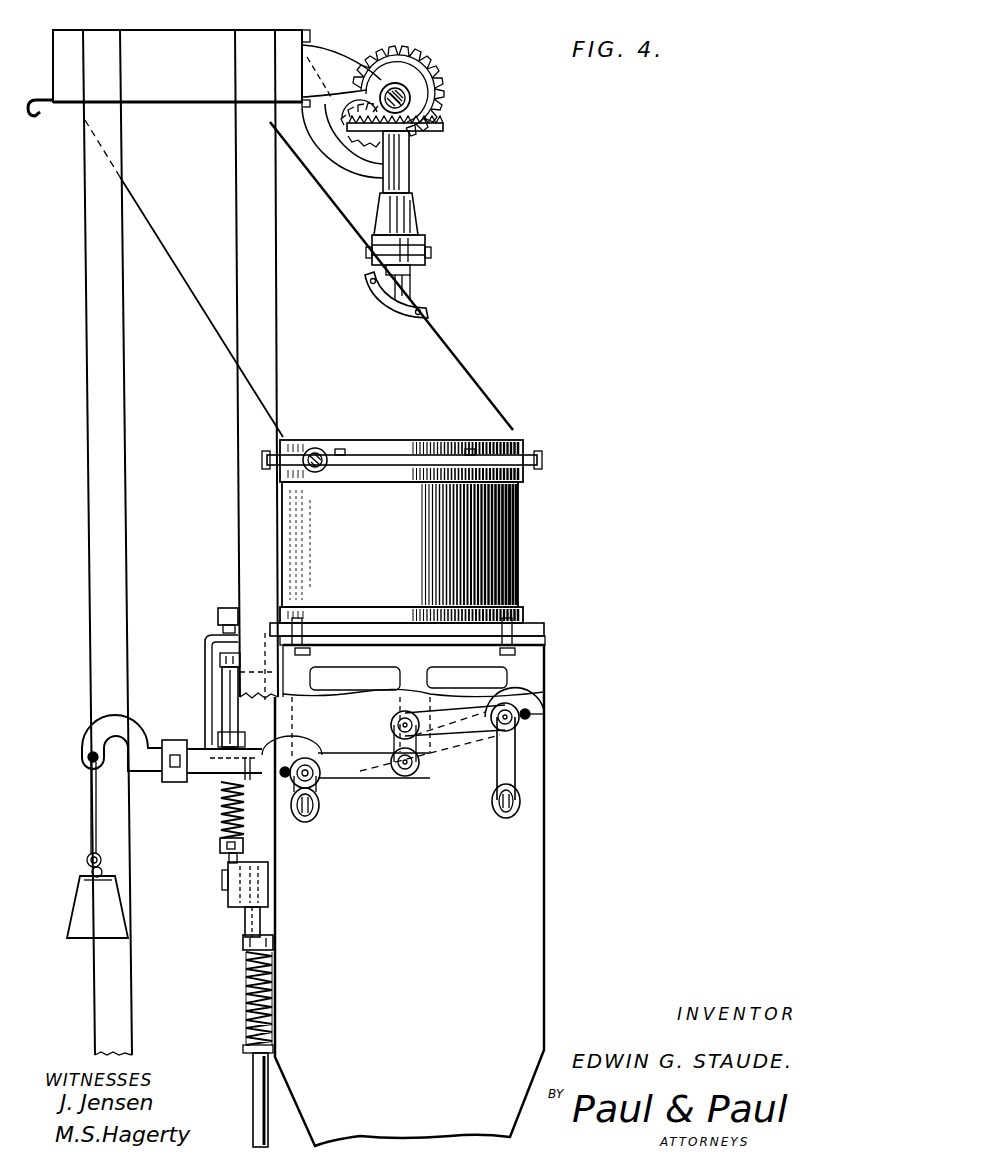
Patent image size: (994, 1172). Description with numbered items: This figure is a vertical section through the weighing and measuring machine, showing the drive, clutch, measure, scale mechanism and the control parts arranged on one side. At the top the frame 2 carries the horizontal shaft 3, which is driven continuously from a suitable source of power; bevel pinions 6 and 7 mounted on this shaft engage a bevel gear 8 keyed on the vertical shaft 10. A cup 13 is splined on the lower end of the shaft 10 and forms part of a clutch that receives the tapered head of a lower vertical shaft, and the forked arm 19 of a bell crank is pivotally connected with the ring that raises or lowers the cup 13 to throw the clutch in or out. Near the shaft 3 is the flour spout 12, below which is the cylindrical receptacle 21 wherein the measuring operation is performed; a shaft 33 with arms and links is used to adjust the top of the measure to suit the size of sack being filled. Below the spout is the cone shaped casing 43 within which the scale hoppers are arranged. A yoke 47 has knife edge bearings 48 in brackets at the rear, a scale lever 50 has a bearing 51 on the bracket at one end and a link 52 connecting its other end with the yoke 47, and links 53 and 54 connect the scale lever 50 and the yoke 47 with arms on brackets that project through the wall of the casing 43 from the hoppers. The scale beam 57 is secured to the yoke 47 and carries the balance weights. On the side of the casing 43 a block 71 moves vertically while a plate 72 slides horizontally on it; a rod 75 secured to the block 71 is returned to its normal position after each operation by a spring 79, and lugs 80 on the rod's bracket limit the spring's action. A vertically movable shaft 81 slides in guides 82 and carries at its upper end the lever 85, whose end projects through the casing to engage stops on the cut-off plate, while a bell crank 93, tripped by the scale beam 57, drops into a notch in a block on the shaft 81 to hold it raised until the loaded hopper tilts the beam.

The frame 2 is at (124, 373).
The horizontal shaft 3 is at (412, 98).
The bevel pinion 6 is at (412, 62).
The bevel pinion 7 is at (440, 76).
The bevel gear 8 is at (440, 129).
The shaft 10 is at (404, 195).
The flour spout 12 is at (452, 374).
The cup 13 is at (416, 217).
The forked arm 19 is at (428, 251).
The cylindrical receptacle 21 is at (520, 520).
The shaft 33 is at (324, 451).
The cone shaped casing 43 is at (530, 963).
The yoke 47 is at (360, 770).
The knife edge bearings 48 is at (291, 764).
The scale lever 50 is at (465, 727).
The bearing 51 is at (534, 719).
The link 52 is at (392, 740).
The link 53 is at (503, 768).
The link 54 is at (314, 789).
The scale beam 57 is at (206, 770).
The block 71 is at (250, 892).
The plate 72 is at (228, 873).
The rod 75 is at (252, 1070).
The spring 79 is at (246, 998).
The lugs 80 is at (244, 946).
The vertically movable shaft 81 is at (230, 854).
The guides 82 is at (222, 645).
The lever 85 is at (218, 617).
The bell crank 93 is at (226, 706).